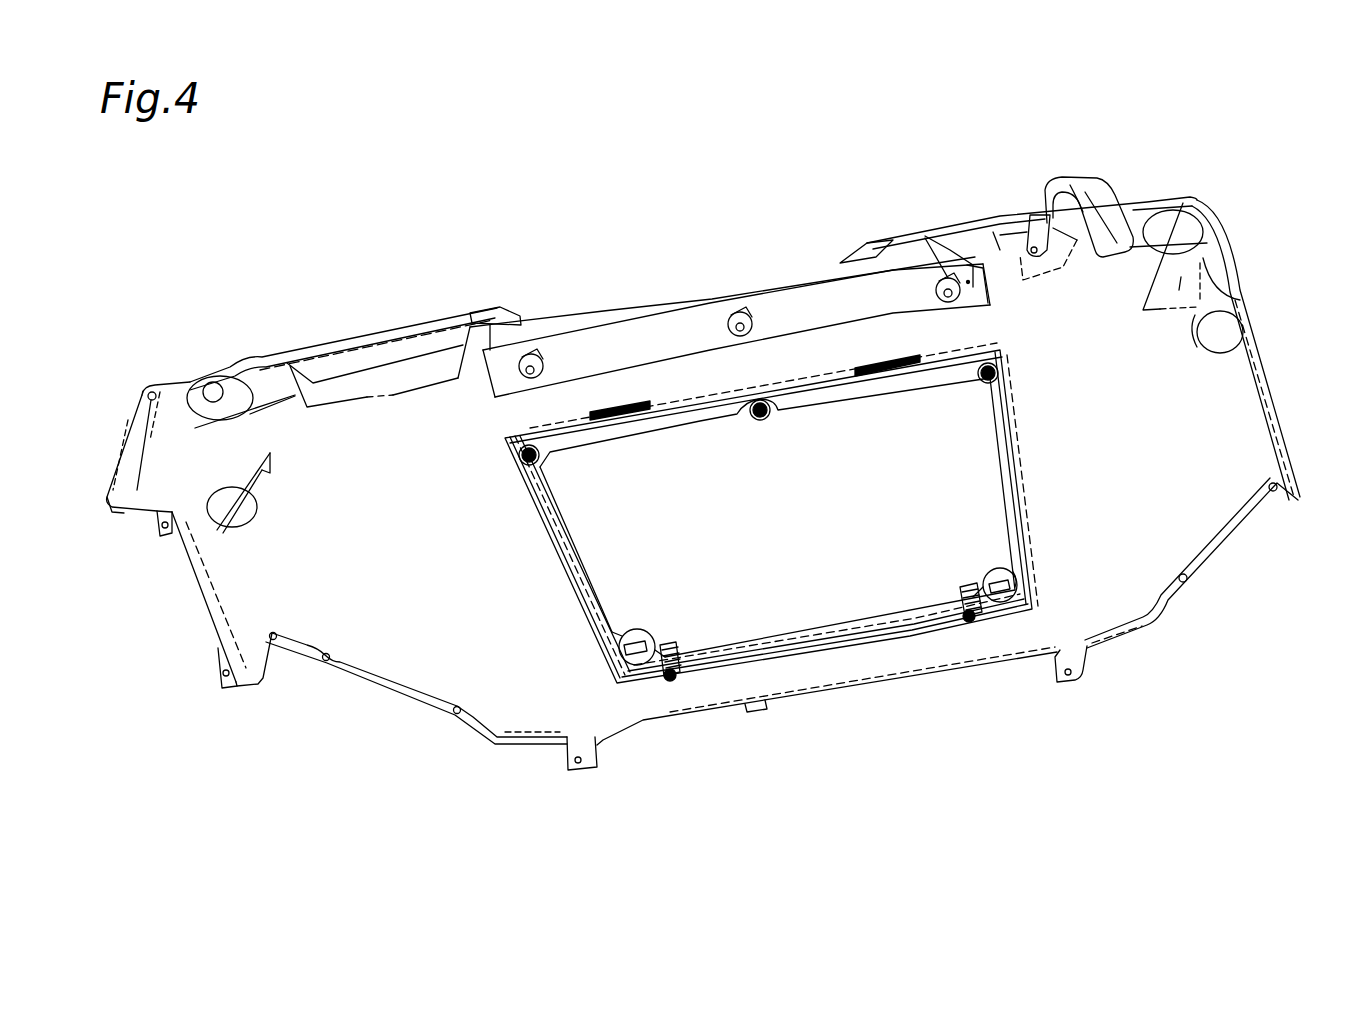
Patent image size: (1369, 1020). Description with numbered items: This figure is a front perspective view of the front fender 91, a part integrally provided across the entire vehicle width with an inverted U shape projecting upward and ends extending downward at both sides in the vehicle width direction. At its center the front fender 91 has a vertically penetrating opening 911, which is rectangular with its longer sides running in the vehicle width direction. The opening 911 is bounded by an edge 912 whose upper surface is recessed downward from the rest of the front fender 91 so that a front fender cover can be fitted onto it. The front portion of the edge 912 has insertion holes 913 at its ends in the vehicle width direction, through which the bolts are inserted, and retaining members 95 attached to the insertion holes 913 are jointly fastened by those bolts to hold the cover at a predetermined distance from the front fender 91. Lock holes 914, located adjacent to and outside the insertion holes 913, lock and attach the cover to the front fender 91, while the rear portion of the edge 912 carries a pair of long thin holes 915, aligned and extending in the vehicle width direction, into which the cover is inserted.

The front fender 91 is at (1236, 198).
The opening 911 is at (824, 592).
The edge 912 is at (721, 655).
The insertion holes 913 is at (670, 673).
The lock holes 914 is at (638, 655).
The long thin holes 915 is at (617, 410).
The retaining members 95 is at (675, 658).